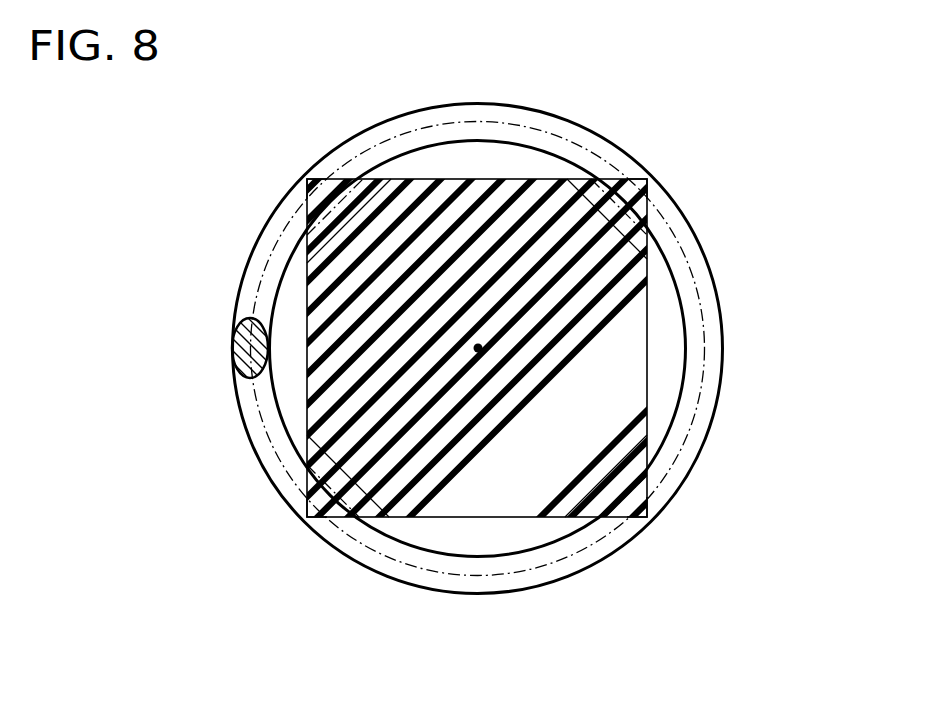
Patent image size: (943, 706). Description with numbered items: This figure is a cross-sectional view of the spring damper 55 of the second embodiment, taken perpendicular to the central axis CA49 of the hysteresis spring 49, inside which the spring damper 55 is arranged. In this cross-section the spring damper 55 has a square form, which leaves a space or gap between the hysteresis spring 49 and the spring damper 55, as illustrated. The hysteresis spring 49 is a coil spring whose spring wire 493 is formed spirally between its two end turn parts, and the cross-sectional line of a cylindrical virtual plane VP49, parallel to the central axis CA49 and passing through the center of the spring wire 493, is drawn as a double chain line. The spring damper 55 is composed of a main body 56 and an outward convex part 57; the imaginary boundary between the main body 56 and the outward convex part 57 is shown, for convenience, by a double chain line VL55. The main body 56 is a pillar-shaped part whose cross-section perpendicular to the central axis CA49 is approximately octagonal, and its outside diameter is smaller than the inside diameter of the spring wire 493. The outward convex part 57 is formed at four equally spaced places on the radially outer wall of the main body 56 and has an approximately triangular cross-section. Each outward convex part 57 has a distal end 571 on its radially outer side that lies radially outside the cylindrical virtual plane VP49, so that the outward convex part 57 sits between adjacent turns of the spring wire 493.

The hysteresis spring 49 is at (696, 479).
The spring wire 493 is at (545, 575).
The cylindrical virtual plane VP49 is at (473, 573).
The central axis CA49 is at (478, 345).
The main body 56 is at (528, 248).
The spring damper 55 is at (378, 526).
The outward convex part 57 is at (337, 187).
The distal end 571 is at (307, 179).
The imaginary boundary VL55 is at (307, 234).